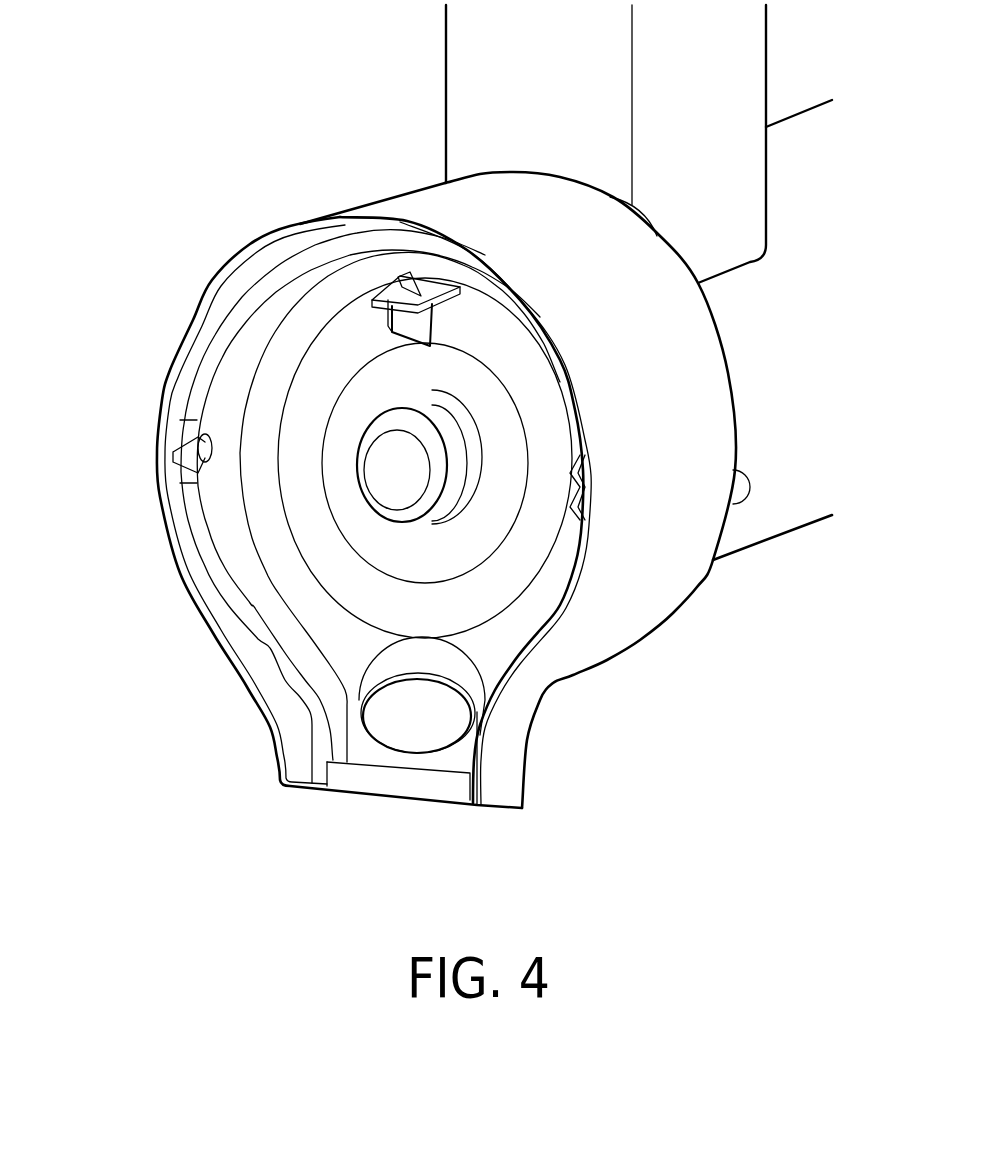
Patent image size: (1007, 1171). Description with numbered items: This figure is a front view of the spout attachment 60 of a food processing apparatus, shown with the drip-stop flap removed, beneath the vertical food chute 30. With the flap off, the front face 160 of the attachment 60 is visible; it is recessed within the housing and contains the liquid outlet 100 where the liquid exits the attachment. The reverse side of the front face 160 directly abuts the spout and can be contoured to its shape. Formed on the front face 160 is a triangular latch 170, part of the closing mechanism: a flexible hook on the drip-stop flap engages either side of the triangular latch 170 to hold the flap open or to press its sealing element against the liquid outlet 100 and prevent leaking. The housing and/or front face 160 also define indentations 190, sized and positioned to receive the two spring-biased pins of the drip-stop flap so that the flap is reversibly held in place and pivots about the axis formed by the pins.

The vertical food chute 30 is at (477, 77).
The spout attachment 60 is at (675, 372).
The liquid outlet 100 is at (413, 715).
The front face 160 is at (503, 632).
The triangular latch 170 is at (393, 287).
The indentations 190 is at (178, 460).